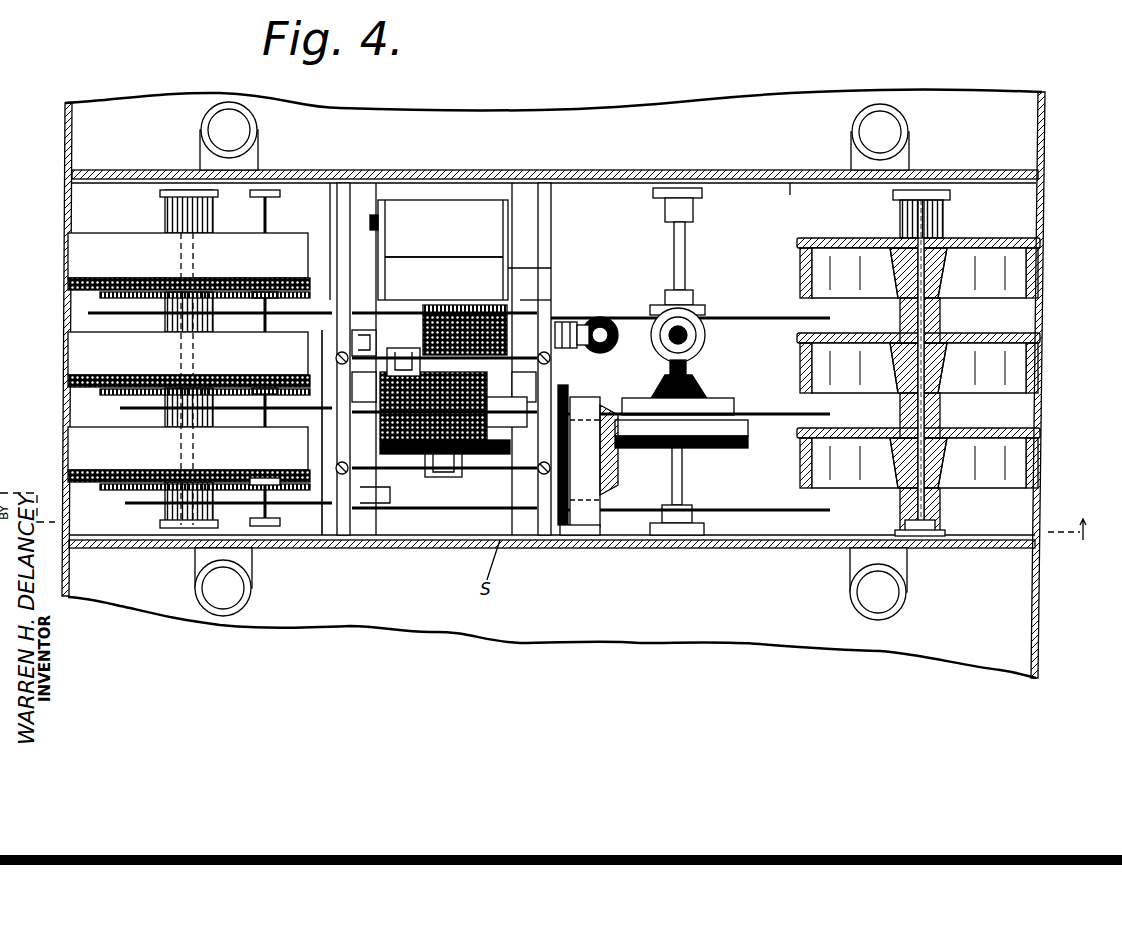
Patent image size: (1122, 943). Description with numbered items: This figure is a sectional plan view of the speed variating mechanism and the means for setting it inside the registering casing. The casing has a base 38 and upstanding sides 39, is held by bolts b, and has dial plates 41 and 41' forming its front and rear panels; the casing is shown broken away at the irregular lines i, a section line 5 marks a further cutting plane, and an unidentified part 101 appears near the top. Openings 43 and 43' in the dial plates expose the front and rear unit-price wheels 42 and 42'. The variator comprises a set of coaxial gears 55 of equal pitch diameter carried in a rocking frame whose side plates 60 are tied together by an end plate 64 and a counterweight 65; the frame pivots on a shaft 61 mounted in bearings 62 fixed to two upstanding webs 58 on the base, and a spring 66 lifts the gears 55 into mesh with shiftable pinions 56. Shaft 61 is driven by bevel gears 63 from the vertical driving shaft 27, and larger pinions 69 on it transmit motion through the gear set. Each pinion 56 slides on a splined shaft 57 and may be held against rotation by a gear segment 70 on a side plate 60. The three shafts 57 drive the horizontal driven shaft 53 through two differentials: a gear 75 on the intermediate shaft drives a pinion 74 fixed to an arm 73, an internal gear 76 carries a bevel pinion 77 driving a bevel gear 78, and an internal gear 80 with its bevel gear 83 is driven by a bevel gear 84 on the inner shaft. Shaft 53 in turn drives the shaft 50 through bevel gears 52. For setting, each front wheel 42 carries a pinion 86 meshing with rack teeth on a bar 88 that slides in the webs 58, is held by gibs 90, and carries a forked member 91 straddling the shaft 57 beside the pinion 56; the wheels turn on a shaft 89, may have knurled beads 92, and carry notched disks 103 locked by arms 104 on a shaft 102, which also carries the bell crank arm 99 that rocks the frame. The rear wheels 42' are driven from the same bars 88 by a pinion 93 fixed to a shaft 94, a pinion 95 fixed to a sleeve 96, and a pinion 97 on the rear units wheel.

The dial plate 41 is at (44, 349).
The dial plate 41' is at (1061, 385).
The upstanding sides 39 is at (762, 176).
The base 38 is at (790, 195).
The bolts b is at (225, 128).
The casing i is at (700, 108).
The price indicator wheels 42 is at (173, 363).
The openings 43 is at (145, 359).
The price indicator wheels 42' is at (941, 347).
The openings 43' is at (951, 372).
The knurled bead 92 is at (72, 284).
The pinion 86 is at (110, 312).
The upstanding arms 104 is at (248, 365).
The disk 103 is at (100, 392).
The shaft 89 is at (195, 550).
The arm 99 is at (322, 540).
The bracket 101 is at (280, 168).
The shaft 102 is at (262, 218).
The counterweight 65 is at (485, 212).
The upstanding webs 58 is at (376, 200).
The spring 66 is at (385, 208).
The side plates 60 is at (385, 256).
The bearings 62 is at (525, 300).
The rack bar 88 is at (465, 313).
The pinion 69 is at (478, 308).
The pinions 56 is at (415, 325).
The member 91 is at (408, 350).
The splined shaft 57 is at (362, 330).
The gear segment 70 is at (444, 387).
The gears 55 is at (510, 428).
The end plate 64 is at (425, 540).
The gibs 90 is at (340, 540).
The shaft 61 is at (556, 318).
The bevel gears 63 is at (580, 322).
The vertical shaft 27 is at (615, 325).
The horizontal shaft 53 is at (688, 268).
The shaft 50 is at (700, 345).
The bevel gears 52 is at (700, 340).
The bevel gear 84 is at (688, 370).
The bevel gear 83 is at (705, 395).
The internal gear 80 is at (745, 428).
The bevel gear 78 is at (705, 448).
The bevel pinion 77 is at (672, 470).
The gear 75 is at (565, 398).
The pinion 74 is at (583, 462).
The internal gear 76 is at (585, 528).
The arm 73 is at (578, 538).
The sleeve 96 is at (905, 314).
The pinion 95 is at (940, 315).
The pinion 97 is at (930, 420).
The shaft 94 is at (912, 525).
The pinion 93 is at (935, 528).
The section line 5 is at (1075, 533).